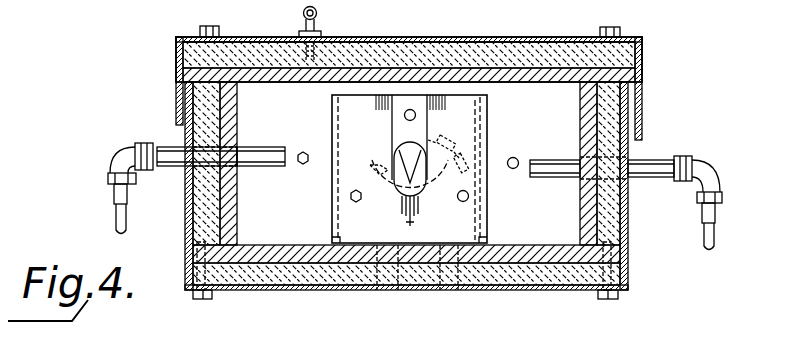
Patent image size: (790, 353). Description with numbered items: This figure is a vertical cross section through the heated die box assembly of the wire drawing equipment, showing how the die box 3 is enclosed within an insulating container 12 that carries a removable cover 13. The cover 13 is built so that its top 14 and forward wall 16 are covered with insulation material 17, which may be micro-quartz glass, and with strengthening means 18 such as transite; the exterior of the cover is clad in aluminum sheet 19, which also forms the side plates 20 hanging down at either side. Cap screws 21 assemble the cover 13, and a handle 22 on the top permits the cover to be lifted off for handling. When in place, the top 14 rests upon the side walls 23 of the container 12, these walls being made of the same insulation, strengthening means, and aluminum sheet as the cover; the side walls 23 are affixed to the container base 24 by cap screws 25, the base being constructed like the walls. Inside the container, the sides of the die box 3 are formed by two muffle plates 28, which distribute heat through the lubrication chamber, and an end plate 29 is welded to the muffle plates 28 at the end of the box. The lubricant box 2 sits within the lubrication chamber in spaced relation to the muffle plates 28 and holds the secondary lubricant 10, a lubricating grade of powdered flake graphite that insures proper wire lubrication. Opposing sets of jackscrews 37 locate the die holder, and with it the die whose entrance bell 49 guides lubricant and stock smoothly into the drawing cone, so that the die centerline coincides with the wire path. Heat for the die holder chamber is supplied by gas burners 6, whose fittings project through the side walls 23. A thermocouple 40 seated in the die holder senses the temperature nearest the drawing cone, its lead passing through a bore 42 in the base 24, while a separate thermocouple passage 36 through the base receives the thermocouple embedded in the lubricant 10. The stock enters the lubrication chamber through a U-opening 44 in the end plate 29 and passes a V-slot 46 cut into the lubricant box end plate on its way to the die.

The lubricant box 2 is at (378, 212).
The die box 3 is at (330, 182).
The gas burners 6 is at (118, 150).
The secondary lubricant 10 is at (397, 148).
The insulating container 12 is at (297, 291).
The removable cover 13 is at (530, 40).
The top 14 is at (350, 41).
The forward wall 16 is at (237, 163).
The insulation material 17 is at (463, 57).
The strengthening means 18 is at (531, 84).
The aluminum sheet 19 is at (304, 37).
The side plates 20 is at (176, 83).
The cap screws 21 is at (211, 26).
The handle 22 is at (318, 13).
The side walls 23 is at (185, 229).
The container base 24 is at (522, 292).
The cap screws 25 is at (203, 300).
The muffle plates 28 is at (332, 231).
The end plate 29 is at (471, 170).
The thermocouple passage 36 is at (447, 292).
The jackscrews 37 is at (416, 115).
The thermocouple 40 is at (377, 292).
The bore 42 is at (398, 292).
The U-opening 44 is at (397, 104).
The V-slot 46 is at (380, 176).
The entrance bell 49 is at (468, 154).